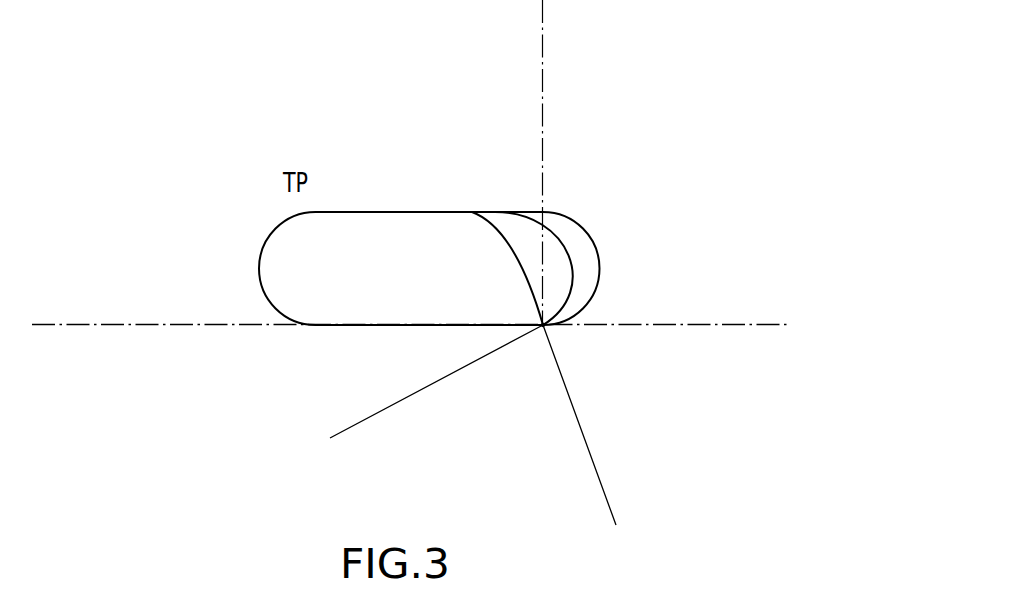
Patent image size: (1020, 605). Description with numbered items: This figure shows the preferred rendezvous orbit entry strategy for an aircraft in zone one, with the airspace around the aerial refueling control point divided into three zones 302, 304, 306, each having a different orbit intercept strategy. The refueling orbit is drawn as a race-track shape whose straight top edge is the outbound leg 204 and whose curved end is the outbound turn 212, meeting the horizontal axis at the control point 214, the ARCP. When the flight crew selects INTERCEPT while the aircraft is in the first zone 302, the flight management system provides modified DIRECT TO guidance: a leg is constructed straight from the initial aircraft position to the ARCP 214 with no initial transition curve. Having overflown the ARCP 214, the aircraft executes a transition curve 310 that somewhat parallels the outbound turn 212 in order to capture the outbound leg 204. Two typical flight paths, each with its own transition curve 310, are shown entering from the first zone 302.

The outbound leg 204 is at (385, 212).
The outbound turn 212 is at (583, 230).
The control point (ARCP) 214 is at (543, 325).
The transition curve 310 is at (490, 222).
The zone 1 302 is at (521, 496).
The zone 2 304 is at (761, 84).
The zone 3 306 is at (227, 84).